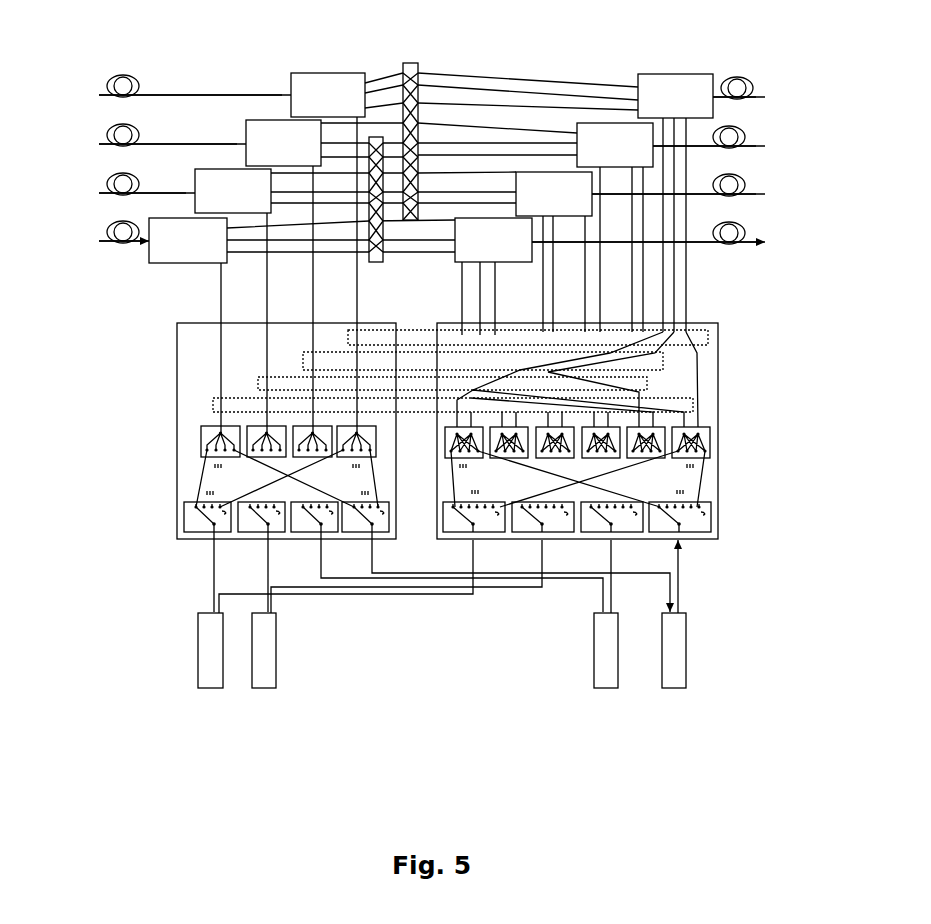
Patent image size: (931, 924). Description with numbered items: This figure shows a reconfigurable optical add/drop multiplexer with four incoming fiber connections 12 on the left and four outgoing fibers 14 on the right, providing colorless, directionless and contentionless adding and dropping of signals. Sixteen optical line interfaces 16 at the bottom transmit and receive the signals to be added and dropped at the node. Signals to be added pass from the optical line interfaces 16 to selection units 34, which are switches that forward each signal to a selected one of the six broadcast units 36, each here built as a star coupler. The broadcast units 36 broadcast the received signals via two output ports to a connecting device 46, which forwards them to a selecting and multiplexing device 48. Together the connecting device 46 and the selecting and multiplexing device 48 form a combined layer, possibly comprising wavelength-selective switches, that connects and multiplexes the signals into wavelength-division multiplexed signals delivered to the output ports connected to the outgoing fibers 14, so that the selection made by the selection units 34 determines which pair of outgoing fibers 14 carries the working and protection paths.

The incoming fiber connections 12 is at (93, 82).
The outgoing fibers 14 is at (773, 77).
The selecting and multiplexing device 48 is at (378, 62).
The connecting device 46 is at (727, 325).
The broadcast units 36 is at (732, 444).
The selection units 34 is at (728, 522).
The optical line interfaces 16 is at (697, 697).